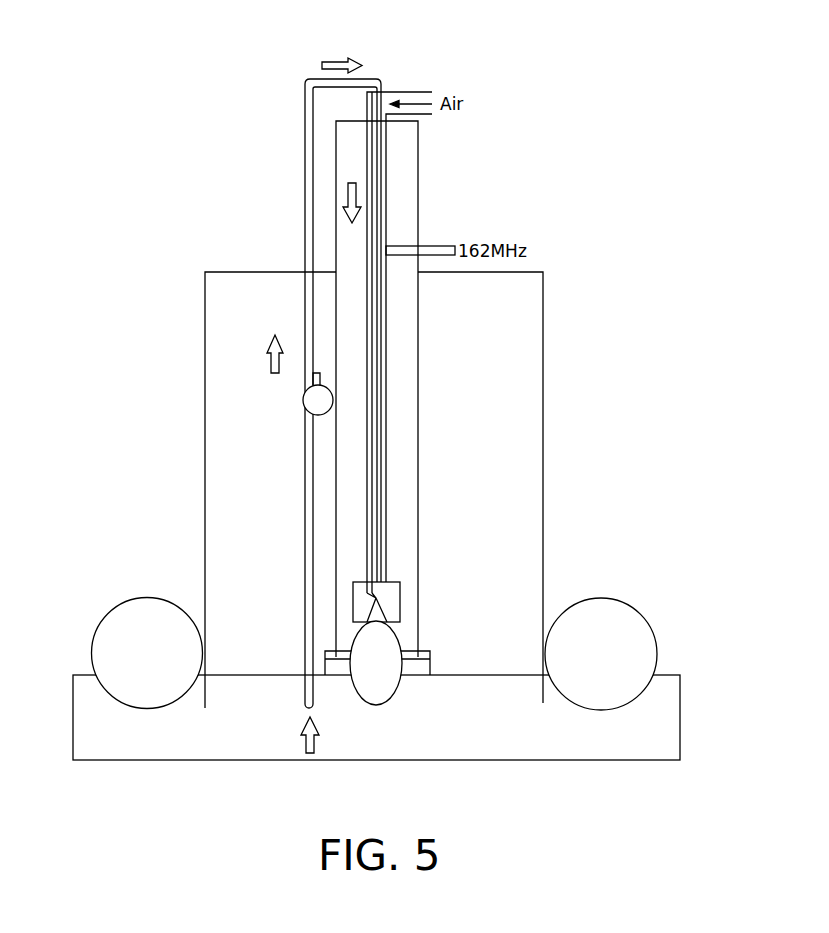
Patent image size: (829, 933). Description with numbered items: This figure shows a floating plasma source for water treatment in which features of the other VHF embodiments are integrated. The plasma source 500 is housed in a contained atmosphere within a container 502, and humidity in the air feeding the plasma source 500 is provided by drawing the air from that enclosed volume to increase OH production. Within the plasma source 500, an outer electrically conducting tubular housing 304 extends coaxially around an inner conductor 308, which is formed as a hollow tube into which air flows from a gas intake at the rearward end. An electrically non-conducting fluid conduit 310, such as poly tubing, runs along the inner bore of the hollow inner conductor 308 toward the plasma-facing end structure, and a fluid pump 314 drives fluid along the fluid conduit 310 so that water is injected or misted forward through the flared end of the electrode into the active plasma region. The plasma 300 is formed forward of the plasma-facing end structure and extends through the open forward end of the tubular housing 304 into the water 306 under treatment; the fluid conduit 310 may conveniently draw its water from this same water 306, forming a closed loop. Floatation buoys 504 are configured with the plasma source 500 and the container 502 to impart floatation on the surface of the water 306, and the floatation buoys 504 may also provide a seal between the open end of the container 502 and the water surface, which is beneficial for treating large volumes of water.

The plasma source 500 is at (222, 84).
The inner conductor 308 is at (387, 185).
The fluid conduit 310 is at (387, 203).
The tubular housing 304 is at (418, 222).
The container 502 is at (543, 272).
The fluid pump 314 is at (300, 401).
The floatation buoys 504 is at (104, 620).
The water sample 306 is at (682, 674).
The plasma 300 is at (362, 703).